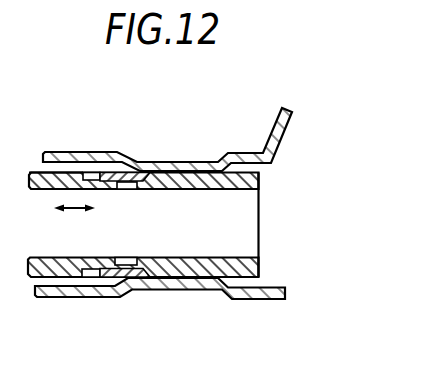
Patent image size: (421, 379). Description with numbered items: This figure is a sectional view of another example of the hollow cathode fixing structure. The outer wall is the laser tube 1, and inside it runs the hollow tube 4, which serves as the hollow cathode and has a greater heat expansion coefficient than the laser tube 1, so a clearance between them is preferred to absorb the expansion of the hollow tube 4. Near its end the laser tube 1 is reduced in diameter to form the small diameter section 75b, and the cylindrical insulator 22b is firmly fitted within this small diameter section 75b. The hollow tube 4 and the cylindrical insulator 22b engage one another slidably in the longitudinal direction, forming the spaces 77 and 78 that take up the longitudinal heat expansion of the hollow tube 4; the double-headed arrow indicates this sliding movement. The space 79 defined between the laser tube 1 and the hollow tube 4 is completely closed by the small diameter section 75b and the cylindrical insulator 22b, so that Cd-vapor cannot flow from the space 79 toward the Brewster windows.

The laser tube 1 is at (93, 153).
The hollow tube 4 is at (58, 276).
The cylindrical insulator 22b is at (262, 180).
The small diameter section 75b is at (173, 165).
The space 77 is at (95, 177).
The space 78 is at (127, 190).
The space 79 is at (68, 166).